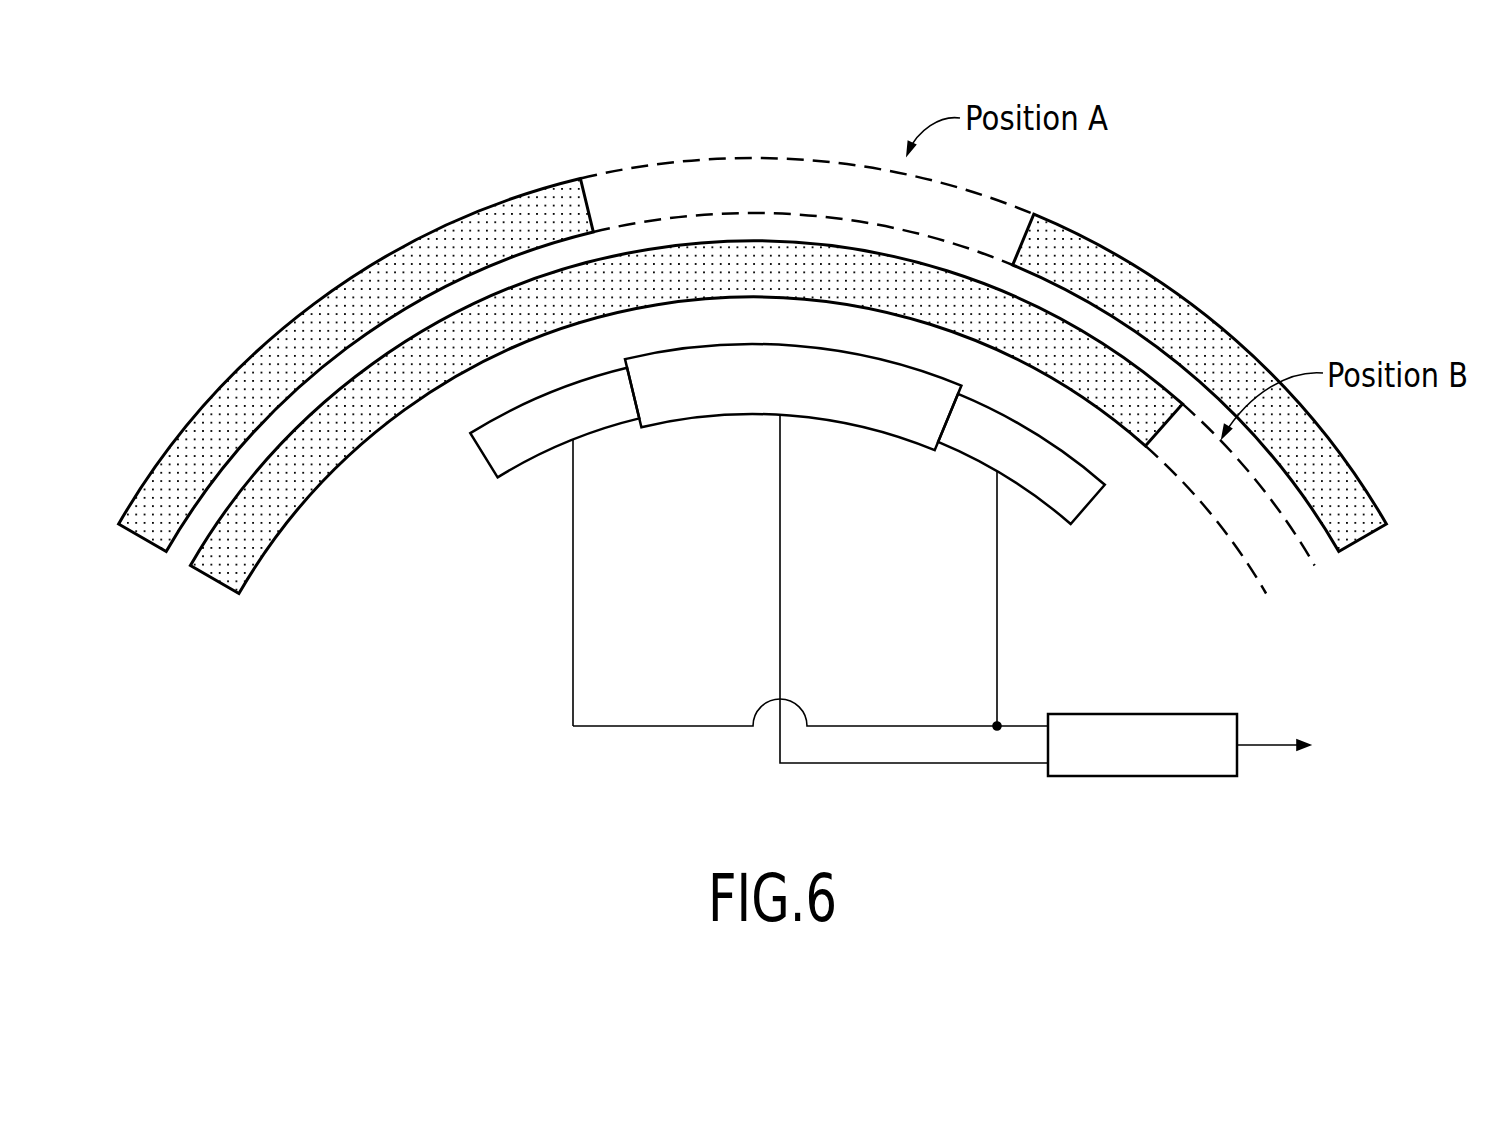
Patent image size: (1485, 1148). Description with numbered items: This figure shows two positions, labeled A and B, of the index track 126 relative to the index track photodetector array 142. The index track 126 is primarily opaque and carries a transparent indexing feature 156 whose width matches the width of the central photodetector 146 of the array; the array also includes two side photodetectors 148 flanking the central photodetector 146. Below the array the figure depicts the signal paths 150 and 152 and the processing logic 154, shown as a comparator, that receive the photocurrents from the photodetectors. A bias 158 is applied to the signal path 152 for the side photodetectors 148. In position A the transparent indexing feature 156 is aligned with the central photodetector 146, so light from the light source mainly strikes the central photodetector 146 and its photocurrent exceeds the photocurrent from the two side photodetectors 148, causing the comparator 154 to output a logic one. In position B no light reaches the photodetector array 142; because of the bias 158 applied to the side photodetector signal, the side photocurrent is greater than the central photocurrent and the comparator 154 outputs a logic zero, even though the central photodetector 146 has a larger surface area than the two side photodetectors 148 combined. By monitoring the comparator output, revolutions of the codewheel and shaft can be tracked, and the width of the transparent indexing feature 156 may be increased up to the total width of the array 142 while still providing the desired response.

The index track 126 is at (713, 158).
The index track photodetector array 142 is at (732, 460).
The central photodetector 146 is at (917, 412).
The side photodetectors 148 is at (615, 420).
The signal path 150 is at (780, 510).
The signal path 152 is at (573, 586).
The processing logic 154 is at (1142, 776).
The transparent indexing feature 156 is at (838, 202).
The bias 158 is at (571, 729).